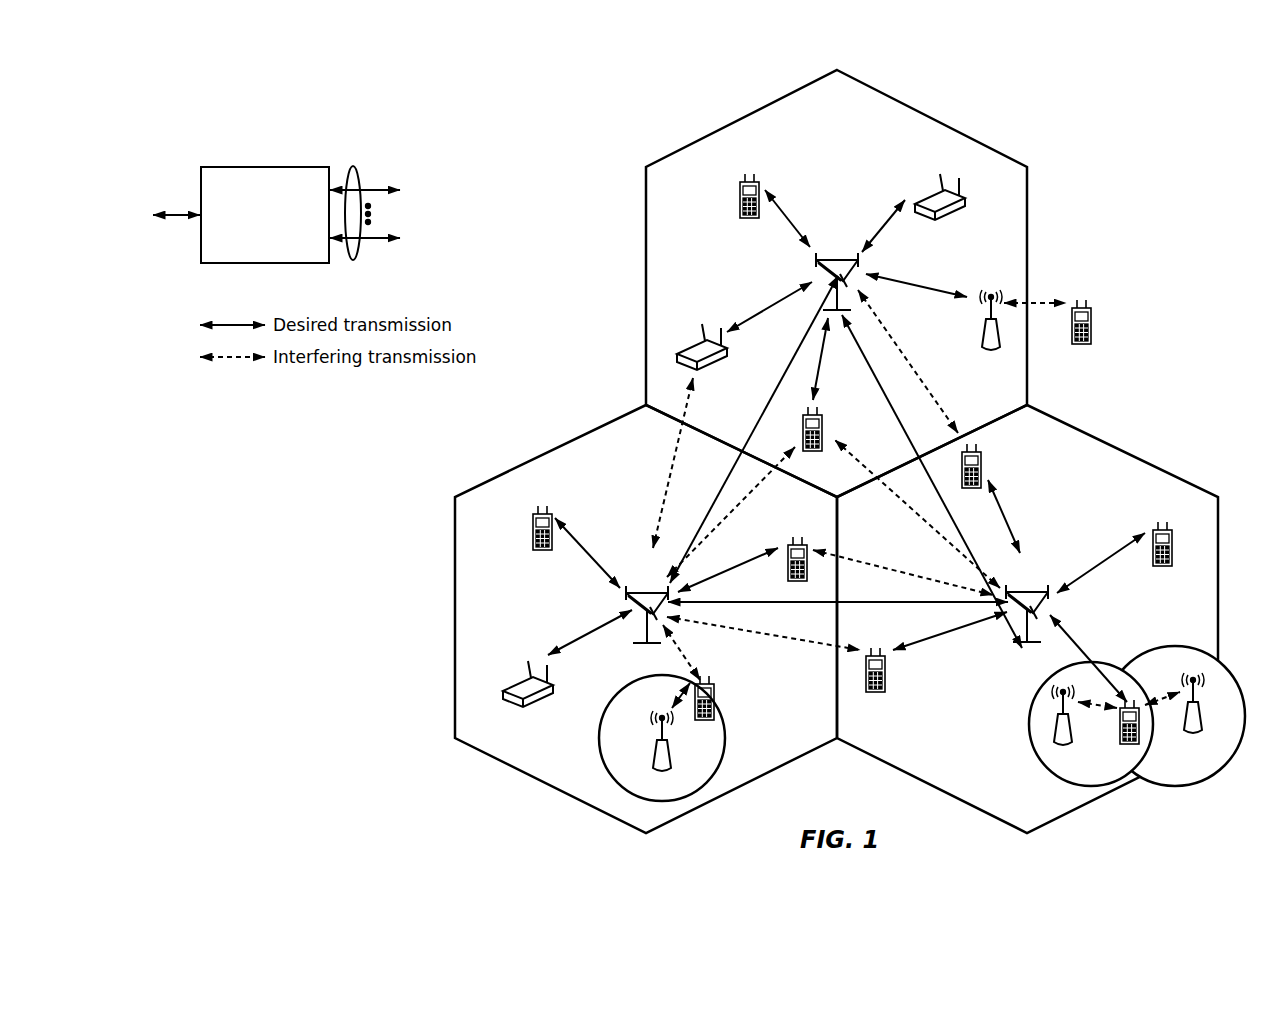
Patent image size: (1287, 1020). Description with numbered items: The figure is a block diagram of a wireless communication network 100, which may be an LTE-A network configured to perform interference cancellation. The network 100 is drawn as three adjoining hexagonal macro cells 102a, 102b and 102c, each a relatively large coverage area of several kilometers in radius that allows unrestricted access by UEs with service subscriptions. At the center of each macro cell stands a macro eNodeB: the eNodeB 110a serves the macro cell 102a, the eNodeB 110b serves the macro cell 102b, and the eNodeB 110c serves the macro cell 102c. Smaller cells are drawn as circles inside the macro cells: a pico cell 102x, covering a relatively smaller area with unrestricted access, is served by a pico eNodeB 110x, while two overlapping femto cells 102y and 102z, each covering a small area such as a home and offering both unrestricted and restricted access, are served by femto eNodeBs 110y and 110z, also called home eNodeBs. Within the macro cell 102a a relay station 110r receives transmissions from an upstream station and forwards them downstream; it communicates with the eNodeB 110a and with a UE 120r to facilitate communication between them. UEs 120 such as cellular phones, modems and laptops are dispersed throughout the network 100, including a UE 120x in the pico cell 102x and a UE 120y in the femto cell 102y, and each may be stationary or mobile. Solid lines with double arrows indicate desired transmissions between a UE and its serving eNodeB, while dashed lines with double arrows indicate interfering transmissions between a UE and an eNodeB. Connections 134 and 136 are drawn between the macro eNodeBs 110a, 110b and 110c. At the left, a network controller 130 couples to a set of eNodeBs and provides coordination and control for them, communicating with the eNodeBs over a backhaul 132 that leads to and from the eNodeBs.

The wireless communication network 100 is at (1160, 131).
The macro cell 102a is at (931, 119).
The macro cell 102b is at (548, 452).
The macro cell 102c is at (1135, 442).
The pico cell 102x is at (616, 695).
The femto cell 102y is at (1034, 696).
The femto cell 102z is at (1182, 634).
The macro eNodeB 110a is at (845, 244).
The macro eNodeB 110b is at (650, 580).
The macro eNodeB 110c is at (1040, 578).
The relay station 110r is at (978, 336).
The pico eNodeB 110x is at (671, 762).
The femto eNodeB 110y is at (1072, 738).
The femto eNodeB 110z is at (1202, 724).
The UE 120 is at (738, 194).
The UE 120r is at (1092, 340).
The UE 120x is at (715, 689).
The UE 120y is at (1120, 746).
The network controller 130 is at (267, 166).
The backhaul 132 is at (356, 166).
The desired transmission between eNBs 134 is at (746, 435).
The interfering transmission 136 is at (898, 434).